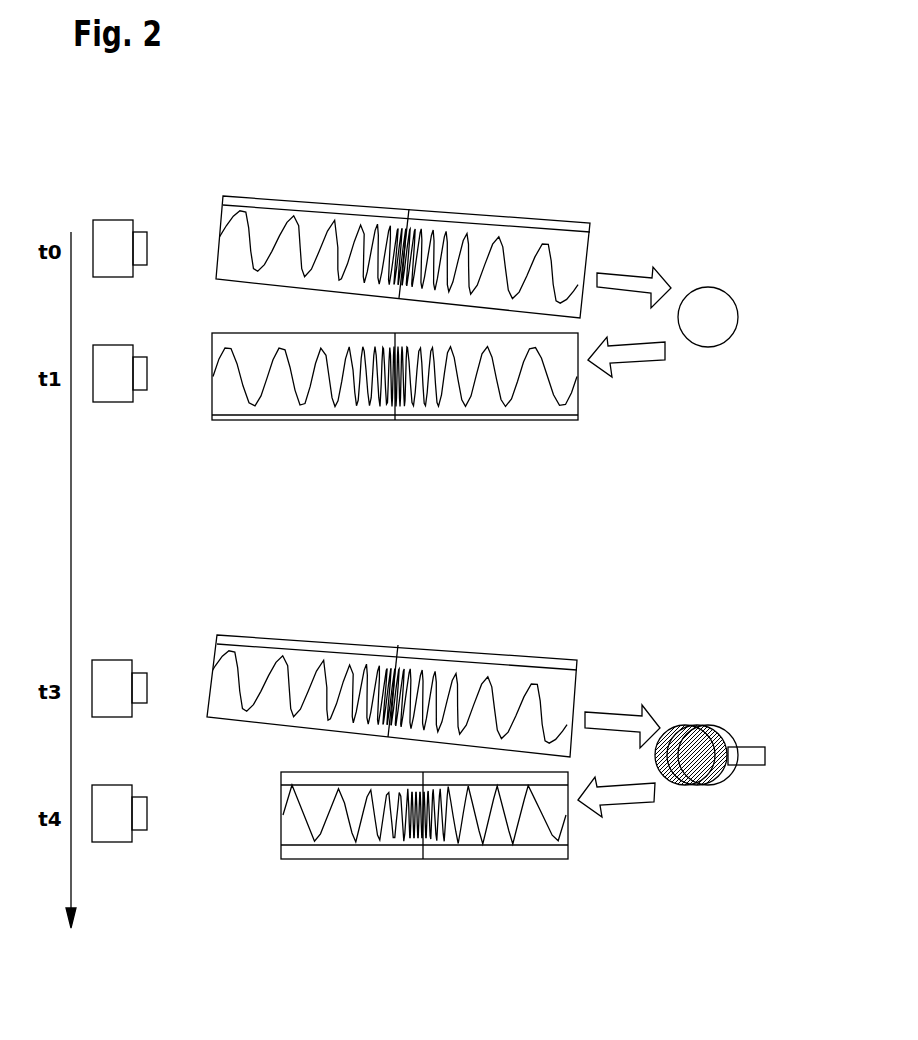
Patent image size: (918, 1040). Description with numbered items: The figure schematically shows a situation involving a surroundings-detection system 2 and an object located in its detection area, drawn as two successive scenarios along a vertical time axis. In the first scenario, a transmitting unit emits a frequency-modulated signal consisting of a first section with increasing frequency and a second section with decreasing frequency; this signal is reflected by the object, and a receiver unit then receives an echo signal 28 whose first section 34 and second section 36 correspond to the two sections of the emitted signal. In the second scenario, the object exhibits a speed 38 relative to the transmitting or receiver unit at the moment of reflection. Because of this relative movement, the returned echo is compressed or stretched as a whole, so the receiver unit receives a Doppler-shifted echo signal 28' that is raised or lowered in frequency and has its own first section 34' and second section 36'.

The surroundings-detection system 2 is at (119, 894).
The echo signal 28 is at (396, 430).
The Doppler-shifted echo signal 28' is at (425, 869).
The first section 34 is at (303, 449).
The second section 36 is at (487, 446).
The first section 34' is at (352, 886).
The second section 36' is at (496, 885).
The speed 38 is at (752, 753).